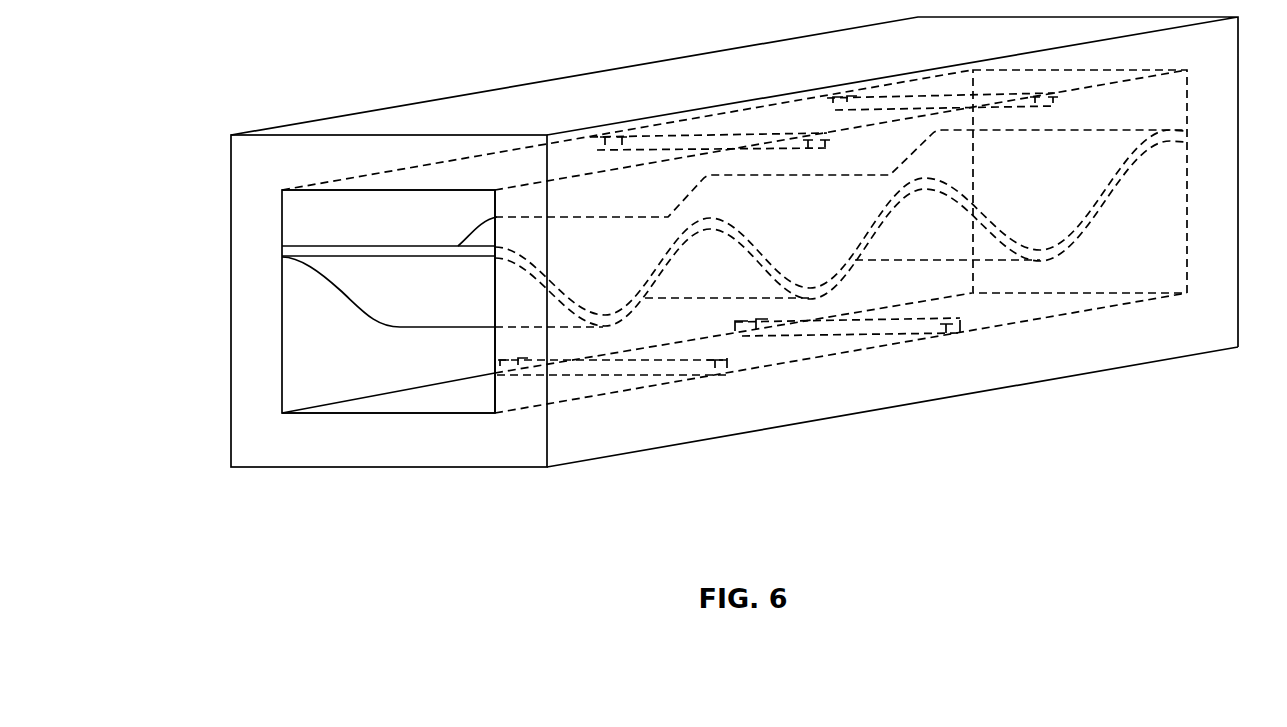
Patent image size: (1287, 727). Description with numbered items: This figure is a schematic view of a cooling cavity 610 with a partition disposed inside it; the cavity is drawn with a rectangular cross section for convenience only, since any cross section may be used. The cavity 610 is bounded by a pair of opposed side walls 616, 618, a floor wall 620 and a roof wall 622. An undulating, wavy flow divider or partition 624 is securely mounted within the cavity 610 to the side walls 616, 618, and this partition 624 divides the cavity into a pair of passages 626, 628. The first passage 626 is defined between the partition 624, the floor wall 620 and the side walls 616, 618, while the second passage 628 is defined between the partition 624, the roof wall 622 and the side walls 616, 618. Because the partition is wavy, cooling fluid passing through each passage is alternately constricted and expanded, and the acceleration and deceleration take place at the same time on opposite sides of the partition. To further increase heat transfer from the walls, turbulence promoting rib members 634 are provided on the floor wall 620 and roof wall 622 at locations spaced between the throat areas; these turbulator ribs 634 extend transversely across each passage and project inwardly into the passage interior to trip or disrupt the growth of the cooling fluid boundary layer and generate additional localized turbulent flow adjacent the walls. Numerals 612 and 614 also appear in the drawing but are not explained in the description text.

The cavity 610 is at (307, 343).
The lower waveguide section 612 is at (352, 375).
The housing 614 is at (682, 75).
The side wall 616 is at (288, 214).
The side wall 618 is at (495, 400).
The floor wall 620 is at (404, 406).
The roof wall 622 is at (355, 188).
The partition 624 is at (427, 257).
The first passage 626 is at (1117, 258).
The second passage 628 is at (1127, 118).
The rib member 634 is at (950, 333).